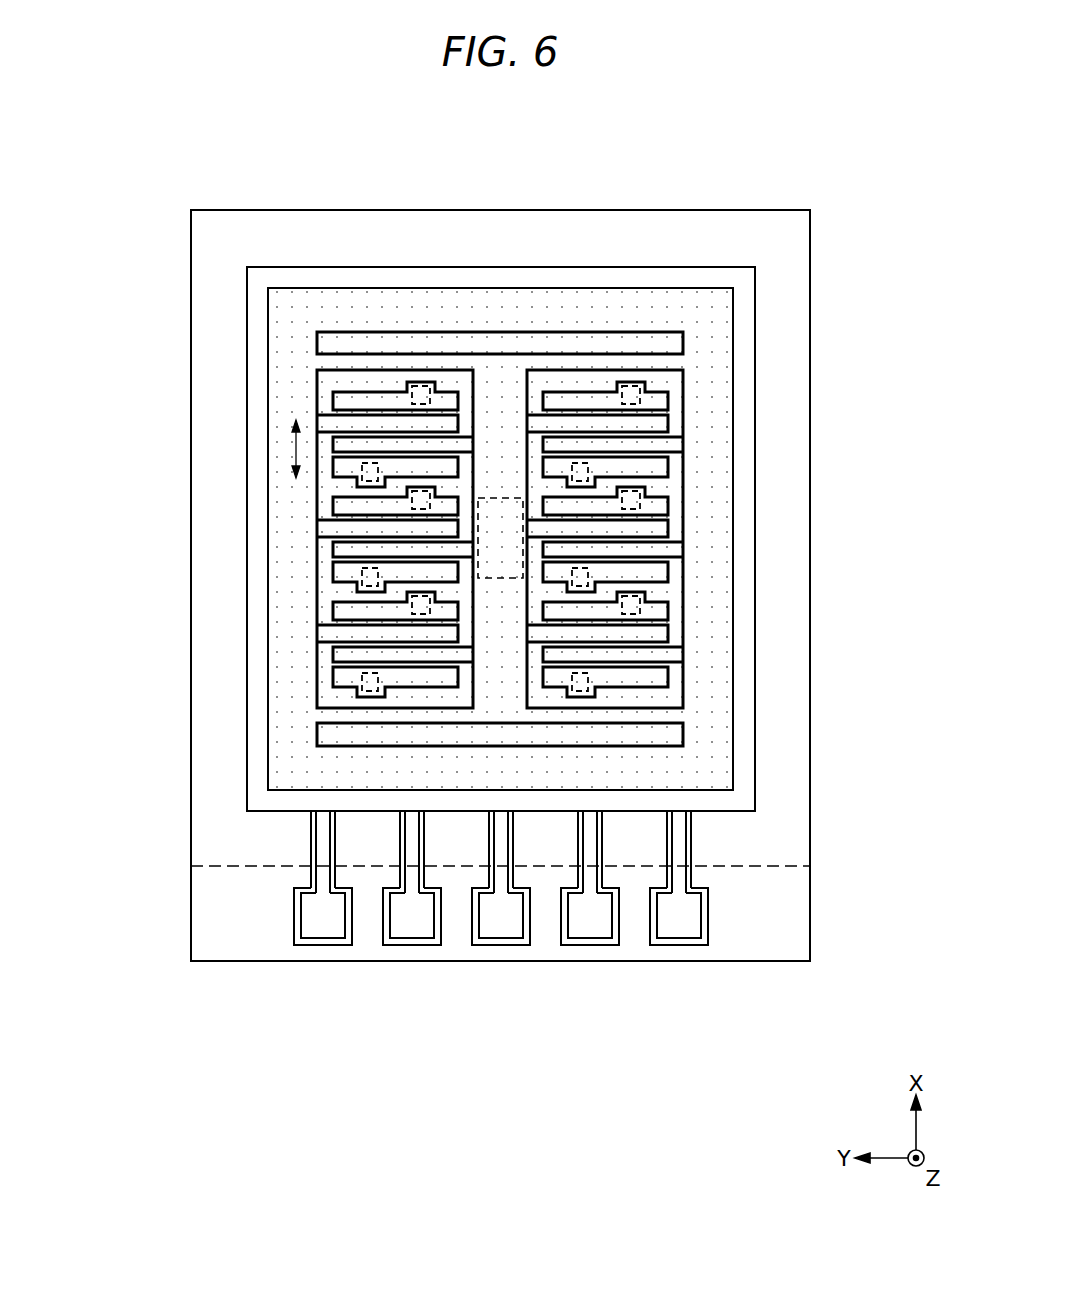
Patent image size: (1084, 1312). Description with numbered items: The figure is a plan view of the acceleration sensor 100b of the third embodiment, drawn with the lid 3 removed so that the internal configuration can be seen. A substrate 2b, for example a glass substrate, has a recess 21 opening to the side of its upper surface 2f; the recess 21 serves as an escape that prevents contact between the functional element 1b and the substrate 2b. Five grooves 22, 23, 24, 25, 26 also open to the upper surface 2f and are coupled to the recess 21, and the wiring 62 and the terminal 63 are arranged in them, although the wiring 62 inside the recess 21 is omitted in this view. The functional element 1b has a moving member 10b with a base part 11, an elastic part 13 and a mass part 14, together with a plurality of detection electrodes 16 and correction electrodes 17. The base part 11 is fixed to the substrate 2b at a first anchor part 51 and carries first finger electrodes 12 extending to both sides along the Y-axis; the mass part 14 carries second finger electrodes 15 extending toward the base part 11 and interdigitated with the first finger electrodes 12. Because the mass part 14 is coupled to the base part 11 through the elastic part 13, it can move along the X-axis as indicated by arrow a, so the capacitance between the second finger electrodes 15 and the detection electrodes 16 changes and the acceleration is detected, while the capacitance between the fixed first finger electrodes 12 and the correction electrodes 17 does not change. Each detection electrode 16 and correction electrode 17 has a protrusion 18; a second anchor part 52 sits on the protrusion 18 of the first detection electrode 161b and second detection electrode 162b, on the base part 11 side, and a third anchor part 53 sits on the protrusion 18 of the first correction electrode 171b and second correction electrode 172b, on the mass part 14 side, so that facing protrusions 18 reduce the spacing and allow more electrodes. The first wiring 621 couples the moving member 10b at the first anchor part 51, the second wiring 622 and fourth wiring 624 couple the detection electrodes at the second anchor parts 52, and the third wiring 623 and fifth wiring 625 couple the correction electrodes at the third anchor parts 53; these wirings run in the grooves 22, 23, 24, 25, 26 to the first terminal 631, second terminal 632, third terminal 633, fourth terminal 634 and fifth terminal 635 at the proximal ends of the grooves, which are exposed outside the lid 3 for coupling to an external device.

The acceleration sensor 100b is at (850, 163).
The moving member 10b is at (298, 305).
The functional element 1b is at (355, 278).
The elastic part 13 is at (410, 357).
The base part 11 is at (500, 387).
The lid 3 is at (803, 231).
The recess 21 is at (745, 311).
The mass part 14 is at (290, 352).
The second finger electrode 15 is at (330, 528).
The first finger electrode 12 is at (340, 549).
The detection electrode 16 is at (501, 539).
The first detection electrode 161b is at (335, 500).
The second detection electrode 162b is at (667, 568).
The correction electrode 17 is at (501, 539).
The first correction electrode 171b is at (335, 575).
The second correction electrode 172b is at (667, 499).
The second anchor part 52 is at (412, 506).
The third anchor part 53 is at (362, 583).
The first anchor part 51 is at (505, 580).
The protrusion 18 is at (368, 697).
The substrate 2b is at (810, 780).
The upper surface 2f is at (797, 914).
The groove 22 is at (510, 878).
The groove 23 is at (421, 878).
The groove 24 is at (332, 878).
The groove 25 is at (599, 878).
The groove 26 is at (688, 878).
The wiring 62 is at (510, 984).
The first wiring 621 is at (523, 895).
The second wiring 622 is at (434, 895).
The third wiring 623 is at (345, 895).
The fourth wiring 624 is at (612, 895).
The fifth wiring 625 is at (701, 895).
The terminal 63 is at (493, 1018).
The first terminal 631 is at (490, 927).
The second terminal 632 is at (401, 927).
The third terminal 633 is at (312, 927).
The fourth terminal 634 is at (579, 927).
The fifth terminal 635 is at (668, 927).